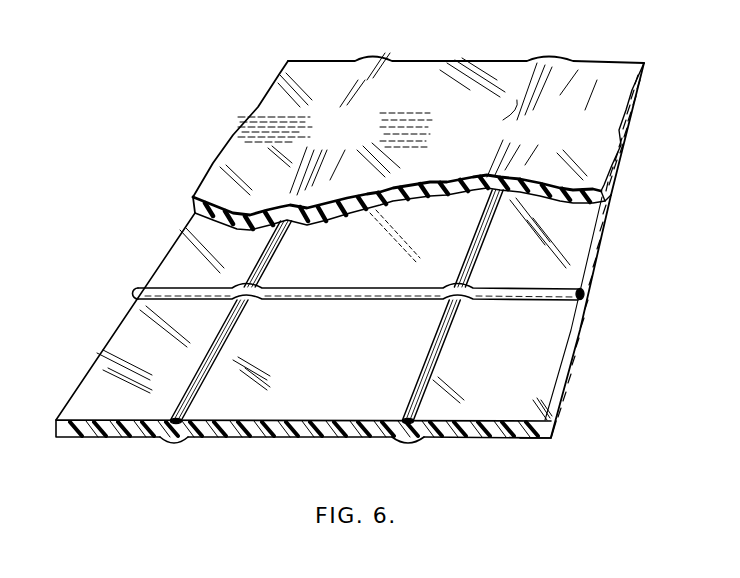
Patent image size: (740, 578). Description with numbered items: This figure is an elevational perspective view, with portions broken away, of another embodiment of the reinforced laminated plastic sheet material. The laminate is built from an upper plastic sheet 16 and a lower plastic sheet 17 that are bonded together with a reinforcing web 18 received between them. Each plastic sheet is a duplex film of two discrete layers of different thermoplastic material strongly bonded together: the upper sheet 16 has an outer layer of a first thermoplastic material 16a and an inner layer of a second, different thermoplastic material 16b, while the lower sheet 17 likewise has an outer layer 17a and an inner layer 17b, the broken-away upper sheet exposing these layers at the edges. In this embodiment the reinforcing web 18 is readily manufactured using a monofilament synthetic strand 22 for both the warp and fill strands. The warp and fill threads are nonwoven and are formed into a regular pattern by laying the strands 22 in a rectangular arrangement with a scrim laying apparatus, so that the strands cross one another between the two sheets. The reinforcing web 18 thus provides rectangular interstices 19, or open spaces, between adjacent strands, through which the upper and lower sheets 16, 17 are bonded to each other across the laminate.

The upper plastic sheet 16 is at (482, 69).
The outer layer of first thermoplastic material 16a is at (606, 164).
The inner layer of second thermoplastic material 16b is at (607, 213).
The lower plastic sheet 17 is at (173, 260).
The outer layer of lower sheet 17a is at (538, 434).
The inner layer of lower sheet 17b is at (560, 330).
The reinforcing web 18 is at (232, 300).
The interstices 19 is at (338, 408).
The monofilament synthetic strand 22 is at (328, 295).